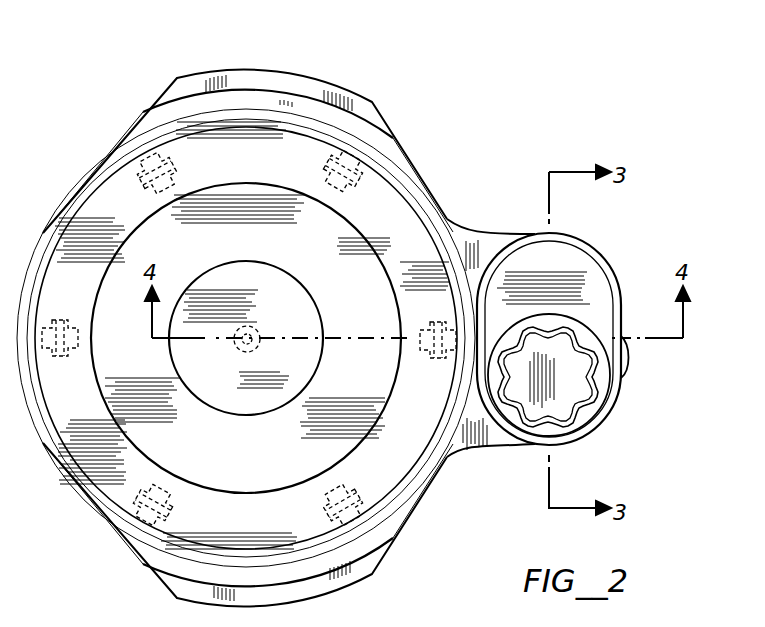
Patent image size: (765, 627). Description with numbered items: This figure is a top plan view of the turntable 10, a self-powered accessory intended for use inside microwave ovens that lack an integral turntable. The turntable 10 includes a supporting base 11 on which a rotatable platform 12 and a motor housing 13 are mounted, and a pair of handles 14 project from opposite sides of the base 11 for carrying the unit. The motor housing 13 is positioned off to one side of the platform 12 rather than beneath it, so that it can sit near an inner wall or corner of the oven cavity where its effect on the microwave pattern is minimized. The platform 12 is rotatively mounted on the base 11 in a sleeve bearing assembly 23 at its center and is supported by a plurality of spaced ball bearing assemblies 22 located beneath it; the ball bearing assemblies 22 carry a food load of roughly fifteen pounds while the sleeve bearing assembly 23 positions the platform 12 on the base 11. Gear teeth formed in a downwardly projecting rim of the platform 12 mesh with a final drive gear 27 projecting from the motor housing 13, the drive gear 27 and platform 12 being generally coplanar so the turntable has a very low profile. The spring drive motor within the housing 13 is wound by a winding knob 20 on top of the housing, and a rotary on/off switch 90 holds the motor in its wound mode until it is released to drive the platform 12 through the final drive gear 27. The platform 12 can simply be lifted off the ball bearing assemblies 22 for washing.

The turntable 10 is at (488, 104).
The supporting base 11 is at (490, 236).
The rotatable platform 12 is at (438, 468).
The motor housing 13 is at (592, 275).
The handles 14 is at (299, 83).
The winding knob 20 is at (570, 395).
The ball bearing assemblies 22 is at (374, 476).
The sleeve bearing assembly 23 is at (257, 333).
The final drive gear 27 is at (477, 328).
The rotary on/off switch 90 is at (628, 363).